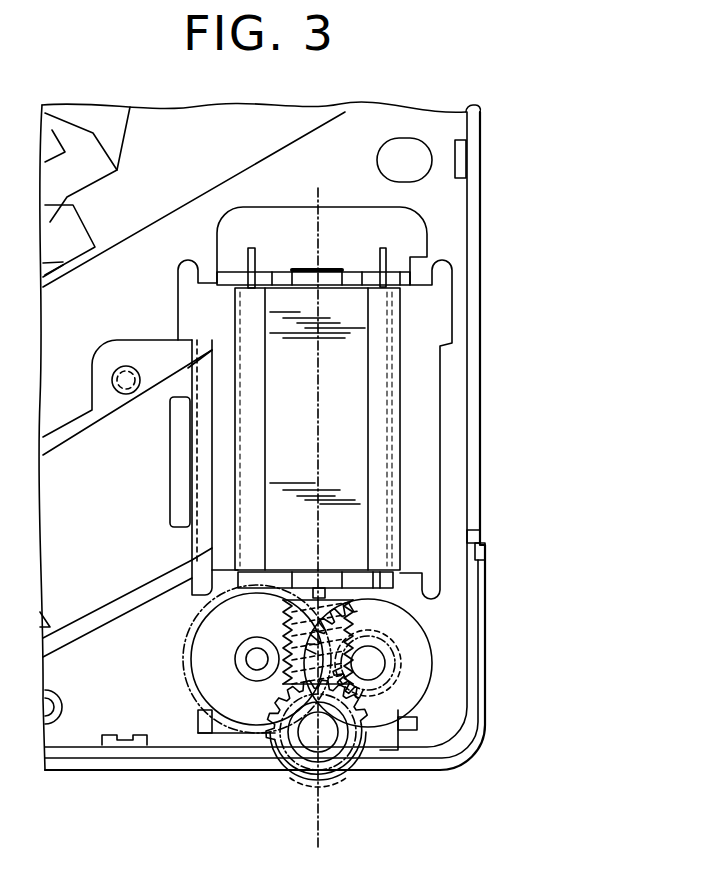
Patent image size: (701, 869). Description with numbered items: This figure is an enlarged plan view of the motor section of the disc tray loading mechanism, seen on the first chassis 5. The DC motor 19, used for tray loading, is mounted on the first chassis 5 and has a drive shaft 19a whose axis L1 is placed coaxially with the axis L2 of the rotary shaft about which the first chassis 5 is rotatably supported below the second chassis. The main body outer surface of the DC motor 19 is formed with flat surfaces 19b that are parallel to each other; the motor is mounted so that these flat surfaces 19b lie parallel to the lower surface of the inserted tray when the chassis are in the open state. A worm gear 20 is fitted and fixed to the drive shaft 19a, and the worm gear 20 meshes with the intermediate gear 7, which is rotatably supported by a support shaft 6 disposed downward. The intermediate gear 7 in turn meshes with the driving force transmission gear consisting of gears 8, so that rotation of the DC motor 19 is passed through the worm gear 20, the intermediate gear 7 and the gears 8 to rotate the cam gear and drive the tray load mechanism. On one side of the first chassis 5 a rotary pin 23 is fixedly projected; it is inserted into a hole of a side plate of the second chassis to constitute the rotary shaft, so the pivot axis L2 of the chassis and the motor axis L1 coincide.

The first chassis 5 is at (473, 450).
The support shaft 6 is at (395, 667).
The intermediate gear 7 is at (418, 645).
The gears 8 is at (250, 730).
The DC motor 19 is at (352, 367).
The drive shaft 19a is at (335, 565).
The flat surfaces 19b is at (350, 323).
The worm gear 20 is at (397, 602).
The rotary pin 23 is at (303, 778).
The axis of the drive shaft L1 is at (320, 818).
The axis of the rotary shaft L2 is at (318, 418).